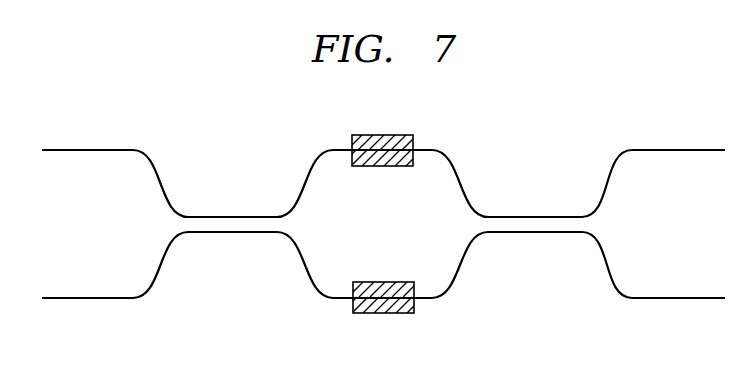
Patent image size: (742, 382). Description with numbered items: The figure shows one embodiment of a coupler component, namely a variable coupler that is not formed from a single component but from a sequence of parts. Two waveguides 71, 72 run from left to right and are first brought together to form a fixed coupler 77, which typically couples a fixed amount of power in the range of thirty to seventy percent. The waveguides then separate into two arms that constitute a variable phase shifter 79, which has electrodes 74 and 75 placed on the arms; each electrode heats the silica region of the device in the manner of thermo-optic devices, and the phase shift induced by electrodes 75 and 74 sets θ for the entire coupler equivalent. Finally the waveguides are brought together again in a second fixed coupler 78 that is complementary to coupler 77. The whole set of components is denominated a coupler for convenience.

The waveguide 71 is at (84, 150).
The waveguide 72 is at (84, 298).
The electrode 74 is at (377, 135).
The electrode 75 is at (383, 313).
The fixed coupler 77 is at (236, 217).
The second fixed coupler 78 is at (535, 217).
The variable phase shifter 79 is at (344, 141).